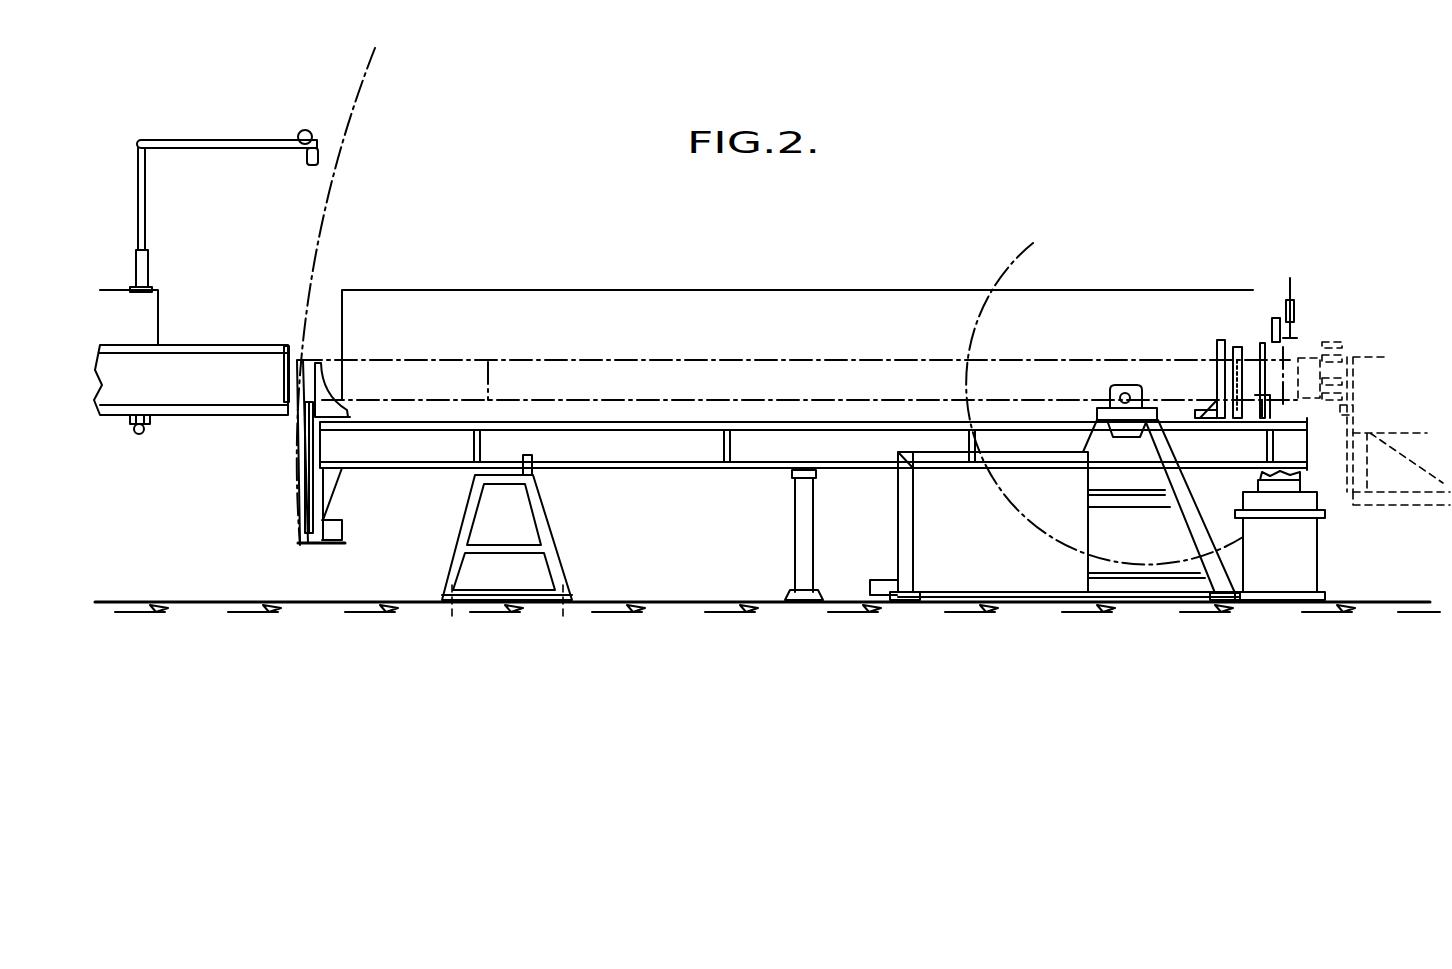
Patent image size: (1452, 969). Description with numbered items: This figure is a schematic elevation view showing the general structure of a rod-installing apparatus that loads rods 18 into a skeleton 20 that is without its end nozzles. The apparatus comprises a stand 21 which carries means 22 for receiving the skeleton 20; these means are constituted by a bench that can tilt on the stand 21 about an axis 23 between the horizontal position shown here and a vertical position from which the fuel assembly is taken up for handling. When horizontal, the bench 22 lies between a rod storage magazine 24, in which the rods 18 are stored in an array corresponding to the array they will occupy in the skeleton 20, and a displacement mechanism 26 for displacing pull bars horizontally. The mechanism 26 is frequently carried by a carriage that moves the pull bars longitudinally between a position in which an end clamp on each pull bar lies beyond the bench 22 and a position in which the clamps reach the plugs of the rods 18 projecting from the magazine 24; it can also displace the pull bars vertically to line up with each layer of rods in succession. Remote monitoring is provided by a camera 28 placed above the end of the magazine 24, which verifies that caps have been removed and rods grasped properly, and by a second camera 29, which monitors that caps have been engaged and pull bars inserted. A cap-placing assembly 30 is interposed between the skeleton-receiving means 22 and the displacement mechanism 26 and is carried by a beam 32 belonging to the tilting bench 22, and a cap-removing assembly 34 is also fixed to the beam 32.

The rods 18 is at (292, 357).
The skeleton 20 is at (642, 370).
The stand 21 is at (455, 565).
The means for receiving the skeleton 22 is at (770, 252).
The axis 23 is at (1125, 395).
The rod storage magazine 24 is at (206, 345).
The displacement mechanism 26 is at (1398, 433).
The camera 28 is at (307, 162).
The second camera 29 is at (1307, 413).
The cap-placing assembly 30 is at (1308, 338).
The beam 32 is at (1207, 453).
The cap-removing assembly 34 is at (292, 480).